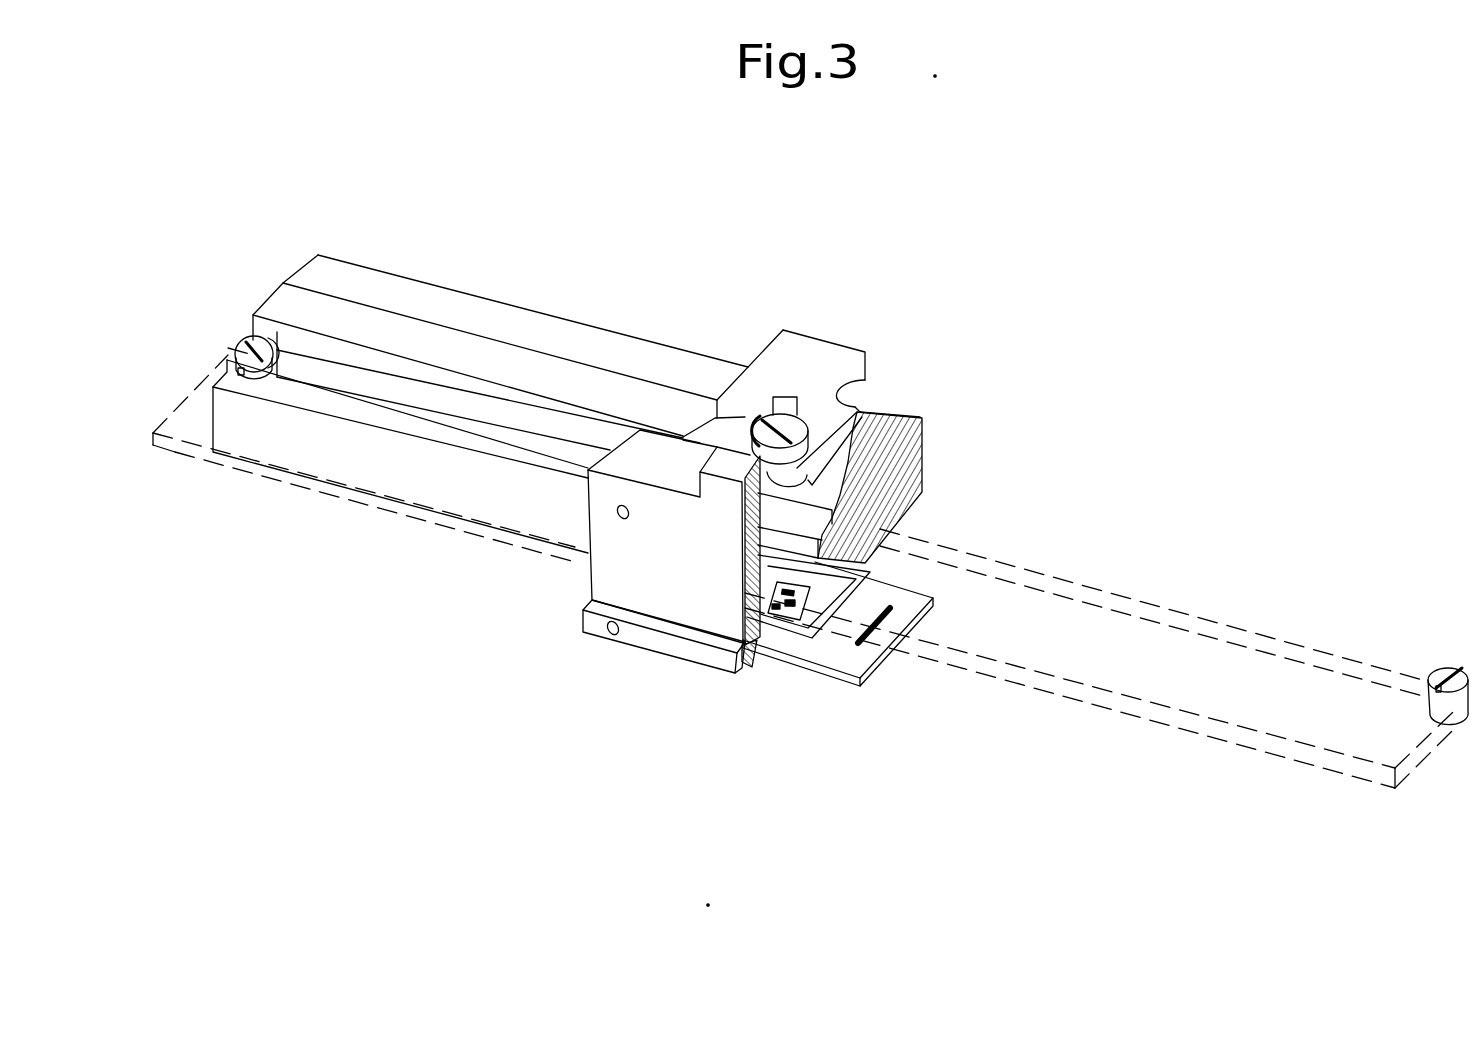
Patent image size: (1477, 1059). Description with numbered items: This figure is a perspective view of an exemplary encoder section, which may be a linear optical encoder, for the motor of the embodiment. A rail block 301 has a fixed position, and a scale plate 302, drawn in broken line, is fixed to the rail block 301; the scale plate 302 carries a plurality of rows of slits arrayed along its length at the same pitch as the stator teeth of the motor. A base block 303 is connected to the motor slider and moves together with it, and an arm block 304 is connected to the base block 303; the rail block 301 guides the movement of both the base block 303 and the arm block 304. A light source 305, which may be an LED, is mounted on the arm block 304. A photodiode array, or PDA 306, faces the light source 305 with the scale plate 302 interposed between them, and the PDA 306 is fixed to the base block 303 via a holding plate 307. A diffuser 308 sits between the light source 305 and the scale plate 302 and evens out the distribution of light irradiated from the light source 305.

The rail block 301 is at (512, 323).
The scale plate 302 is at (1208, 667).
The base block 303 is at (638, 585).
The arm block 304 is at (813, 357).
The light source 305 is at (800, 430).
The photodiode array (PDA) 306 is at (785, 607).
The holding plate 307 is at (873, 647).
The diffuser 308 is at (850, 500).